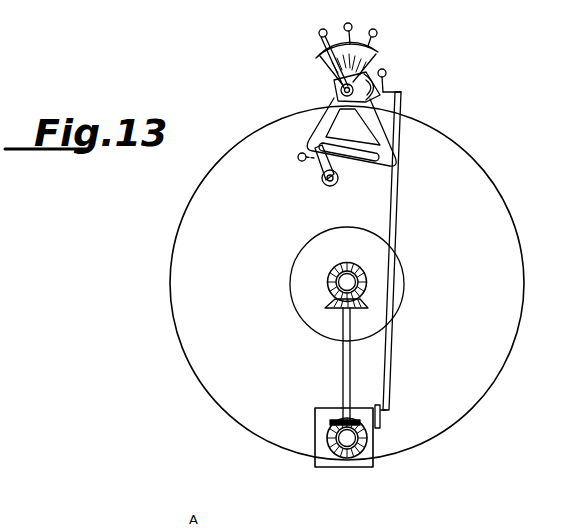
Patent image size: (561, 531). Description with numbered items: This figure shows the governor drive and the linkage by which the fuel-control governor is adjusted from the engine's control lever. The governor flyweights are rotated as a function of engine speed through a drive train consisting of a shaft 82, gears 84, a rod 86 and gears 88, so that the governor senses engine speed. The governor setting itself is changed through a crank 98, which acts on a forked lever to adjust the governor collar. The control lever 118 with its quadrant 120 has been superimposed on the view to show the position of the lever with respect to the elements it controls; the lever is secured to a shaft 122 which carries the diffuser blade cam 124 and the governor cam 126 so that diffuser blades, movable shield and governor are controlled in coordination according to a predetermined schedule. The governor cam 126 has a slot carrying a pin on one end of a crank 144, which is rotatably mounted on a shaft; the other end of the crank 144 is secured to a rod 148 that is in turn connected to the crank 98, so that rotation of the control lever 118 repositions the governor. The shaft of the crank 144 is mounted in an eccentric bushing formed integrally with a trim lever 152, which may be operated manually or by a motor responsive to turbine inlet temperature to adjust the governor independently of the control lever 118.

The shaft 82 is at (350, 440).
The gears 84 is at (330, 438).
The rod 86 is at (343, 368).
The gears 88 is at (328, 299).
The crank 98 is at (382, 420).
The control lever 118 is at (319, 32).
The quadrant 120 is at (322, 58).
The shaft 122 is at (341, 90).
The diffuser blade cam 124 is at (326, 118).
The governor cam 126 is at (378, 100).
The crank 144 is at (400, 90).
The rod 148 is at (393, 190).
The trim lever 152 is at (385, 72).